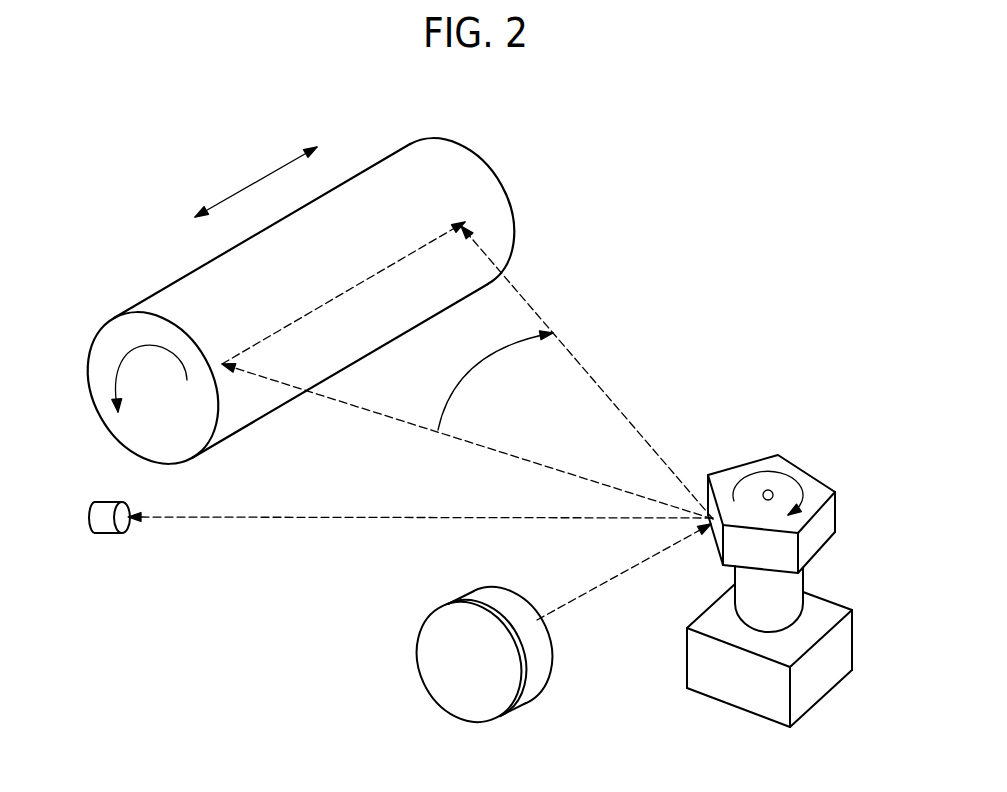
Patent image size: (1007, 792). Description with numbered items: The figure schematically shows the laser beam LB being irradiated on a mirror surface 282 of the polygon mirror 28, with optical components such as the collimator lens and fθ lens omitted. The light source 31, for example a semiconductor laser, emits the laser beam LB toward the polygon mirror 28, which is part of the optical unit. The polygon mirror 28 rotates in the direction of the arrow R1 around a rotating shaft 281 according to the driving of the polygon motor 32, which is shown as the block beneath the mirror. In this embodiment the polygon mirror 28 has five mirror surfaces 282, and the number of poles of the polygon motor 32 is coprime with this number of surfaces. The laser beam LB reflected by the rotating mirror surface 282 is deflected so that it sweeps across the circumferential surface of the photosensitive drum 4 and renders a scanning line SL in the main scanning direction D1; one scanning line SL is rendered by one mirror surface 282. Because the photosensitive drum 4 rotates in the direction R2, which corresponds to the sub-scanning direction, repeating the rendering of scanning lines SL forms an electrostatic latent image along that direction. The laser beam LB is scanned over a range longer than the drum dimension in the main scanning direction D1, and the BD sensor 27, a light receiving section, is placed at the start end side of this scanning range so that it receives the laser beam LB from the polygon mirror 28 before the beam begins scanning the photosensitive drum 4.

The photosensitive drum 4 is at (122, 328).
The BD sensor 27 is at (105, 535).
The polygon mirror 28 is at (775, 515).
The rotating shaft 281 is at (767, 489).
The mirror surface 282 is at (712, 537).
The light source 31 is at (428, 691).
The polygon motor 32 is at (825, 668).
The main scanning direction D1 is at (252, 182).
The scanning line SL is at (348, 287).
The laser beam LB is at (557, 337).
The rotating direction of polygon mirror R1 is at (813, 490).
The rotating direction of photosensitive drum R2 is at (112, 363).